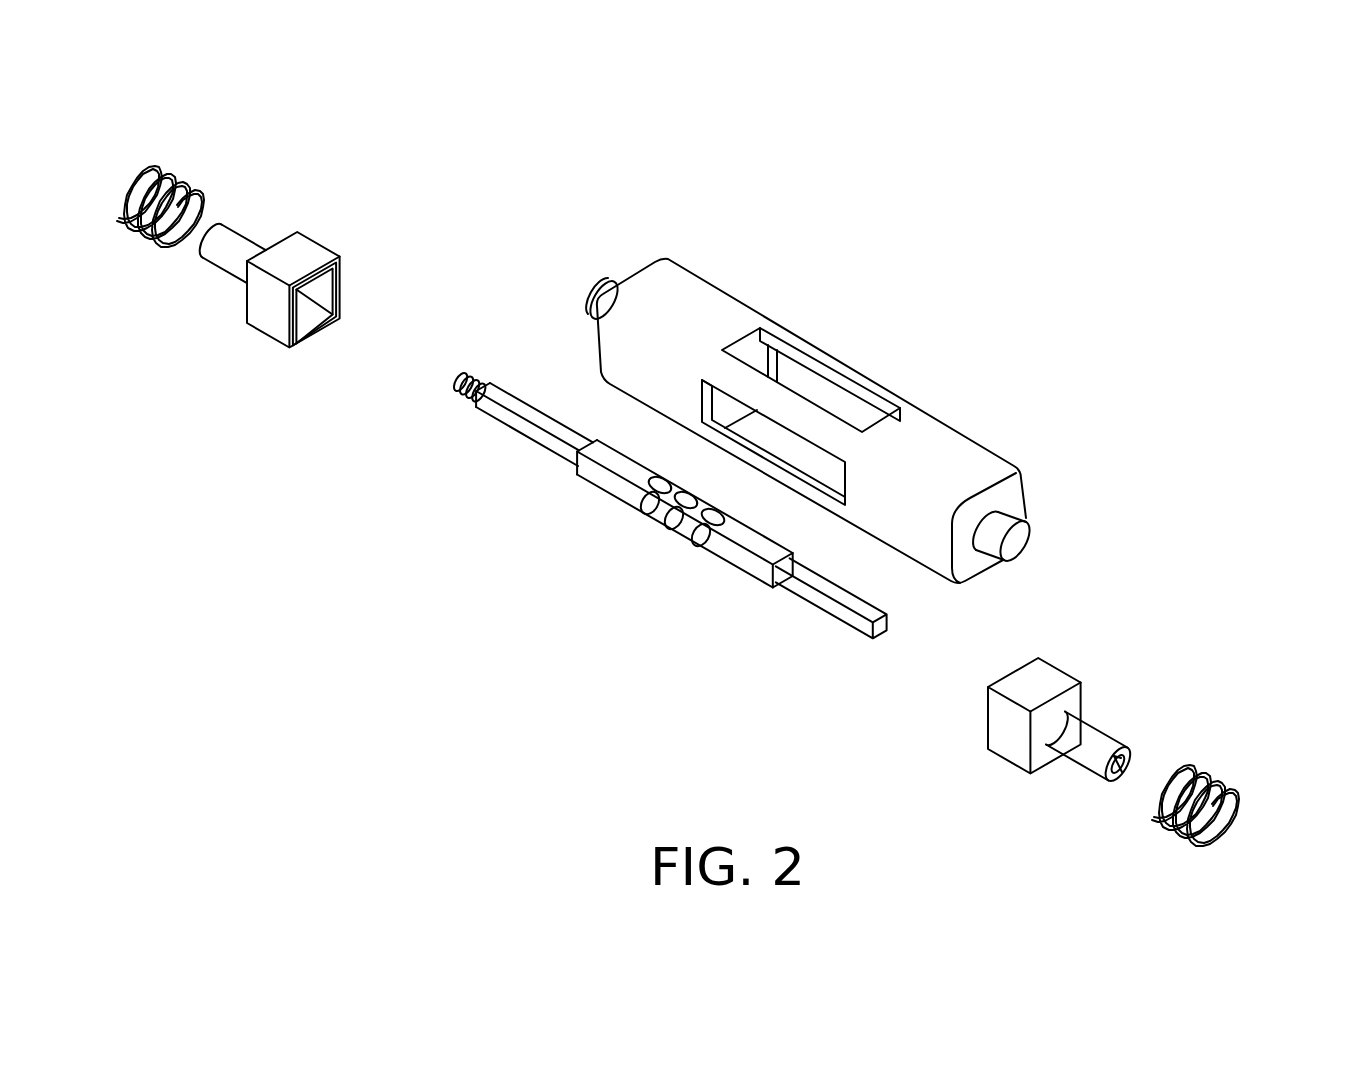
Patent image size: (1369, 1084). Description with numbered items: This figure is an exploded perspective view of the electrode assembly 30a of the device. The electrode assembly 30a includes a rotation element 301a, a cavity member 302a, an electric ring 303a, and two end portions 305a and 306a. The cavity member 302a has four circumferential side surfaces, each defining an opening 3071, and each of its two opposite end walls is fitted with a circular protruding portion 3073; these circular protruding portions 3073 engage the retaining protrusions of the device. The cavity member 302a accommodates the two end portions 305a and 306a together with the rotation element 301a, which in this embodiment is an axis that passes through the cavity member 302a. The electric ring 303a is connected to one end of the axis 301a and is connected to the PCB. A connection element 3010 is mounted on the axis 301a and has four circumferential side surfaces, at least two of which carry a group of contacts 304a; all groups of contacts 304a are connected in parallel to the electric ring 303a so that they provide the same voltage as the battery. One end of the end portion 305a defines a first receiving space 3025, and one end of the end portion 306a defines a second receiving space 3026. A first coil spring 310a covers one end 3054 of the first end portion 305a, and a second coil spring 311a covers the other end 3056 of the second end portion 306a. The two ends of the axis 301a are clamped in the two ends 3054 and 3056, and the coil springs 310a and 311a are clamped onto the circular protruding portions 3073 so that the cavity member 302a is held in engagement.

The electrode assembly 30a is at (625, 146).
The cavity member 302a is at (978, 412).
The opening 3071 is at (728, 407).
The circular protruding portion 3073 is at (596, 296).
The rotation element 301a is at (837, 617).
The connection element 3010 is at (750, 565).
The group of contacts 304a is at (700, 535).
The electric ring 303a is at (462, 395).
The end portion 305a is at (220, 325).
The end of the first end portion 3054 is at (233, 240).
The first receiving space 3025 is at (317, 310).
The first coil spring 310a is at (168, 182).
The end portion 306a is at (1092, 655).
The second receiving space 3026 is at (1003, 722).
The end of the second end portion 3056 is at (1092, 735).
The second coil spring 311a is at (1213, 787).